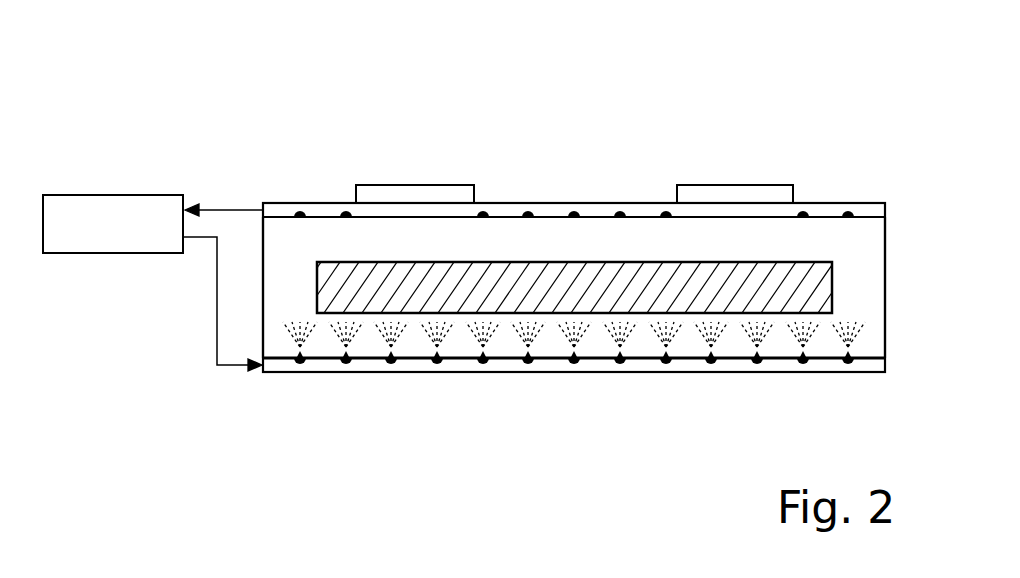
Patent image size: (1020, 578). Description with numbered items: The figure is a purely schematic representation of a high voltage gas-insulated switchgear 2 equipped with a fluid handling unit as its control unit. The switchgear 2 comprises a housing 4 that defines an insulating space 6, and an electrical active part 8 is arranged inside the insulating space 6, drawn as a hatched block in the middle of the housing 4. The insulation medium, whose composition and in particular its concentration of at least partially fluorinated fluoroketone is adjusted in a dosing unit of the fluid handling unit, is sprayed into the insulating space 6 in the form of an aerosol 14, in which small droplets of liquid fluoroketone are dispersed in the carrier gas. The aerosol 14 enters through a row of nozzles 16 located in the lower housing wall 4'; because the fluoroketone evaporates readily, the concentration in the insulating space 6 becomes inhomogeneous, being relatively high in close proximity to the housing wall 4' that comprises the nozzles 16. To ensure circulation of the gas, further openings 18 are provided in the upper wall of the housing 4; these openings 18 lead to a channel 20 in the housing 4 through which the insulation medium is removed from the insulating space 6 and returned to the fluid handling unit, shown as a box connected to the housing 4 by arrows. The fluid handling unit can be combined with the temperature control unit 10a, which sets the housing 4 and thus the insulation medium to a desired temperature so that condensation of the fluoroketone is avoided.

The switchgear 2 is at (719, 127).
The housing 4 is at (578, 147).
The housing wall 4' is at (574, 411).
The insulating space 6 is at (587, 240).
The electrical active part 8 is at (476, 293).
The temperature control unit 10a is at (113, 192).
The aerosol 14 is at (657, 330).
The nozzles 16 is at (708, 366).
The openings 18 is at (488, 208).
The channel 20 is at (552, 208).